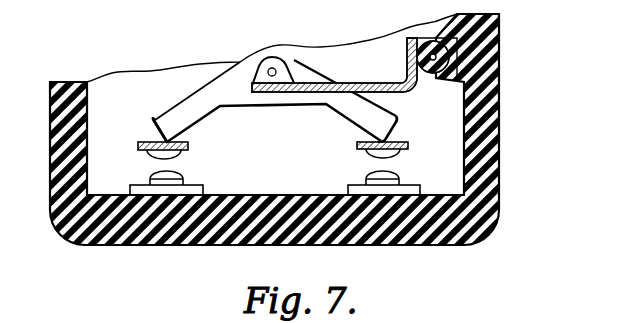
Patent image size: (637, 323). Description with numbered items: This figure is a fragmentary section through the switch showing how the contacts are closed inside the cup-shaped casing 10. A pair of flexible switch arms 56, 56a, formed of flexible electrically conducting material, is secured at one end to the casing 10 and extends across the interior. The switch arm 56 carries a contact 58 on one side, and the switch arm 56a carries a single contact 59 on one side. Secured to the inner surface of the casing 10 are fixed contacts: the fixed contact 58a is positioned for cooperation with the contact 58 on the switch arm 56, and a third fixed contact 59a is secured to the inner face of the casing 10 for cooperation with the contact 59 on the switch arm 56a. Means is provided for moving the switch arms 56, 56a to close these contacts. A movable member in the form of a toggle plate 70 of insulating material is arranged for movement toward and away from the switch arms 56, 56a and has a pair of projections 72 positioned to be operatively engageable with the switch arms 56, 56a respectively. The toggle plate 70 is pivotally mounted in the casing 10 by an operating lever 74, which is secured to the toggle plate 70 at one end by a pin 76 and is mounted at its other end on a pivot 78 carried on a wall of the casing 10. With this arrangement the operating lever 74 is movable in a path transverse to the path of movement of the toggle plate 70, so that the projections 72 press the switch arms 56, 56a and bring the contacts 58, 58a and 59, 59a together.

The casing 10 is at (490, 63).
The toggle plate 70 is at (248, 60).
The projections 72 is at (159, 126).
The operating lever 74 is at (367, 83).
The pin 76 is at (276, 69).
The pivot 78 is at (429, 37).
The switch arm 56 is at (149, 142).
The switch arm 56a is at (350, 131).
The contact 58 is at (184, 154).
The fixed contact 58a is at (182, 176).
The contact 59 is at (376, 156).
The fixed contact 59a is at (370, 178).